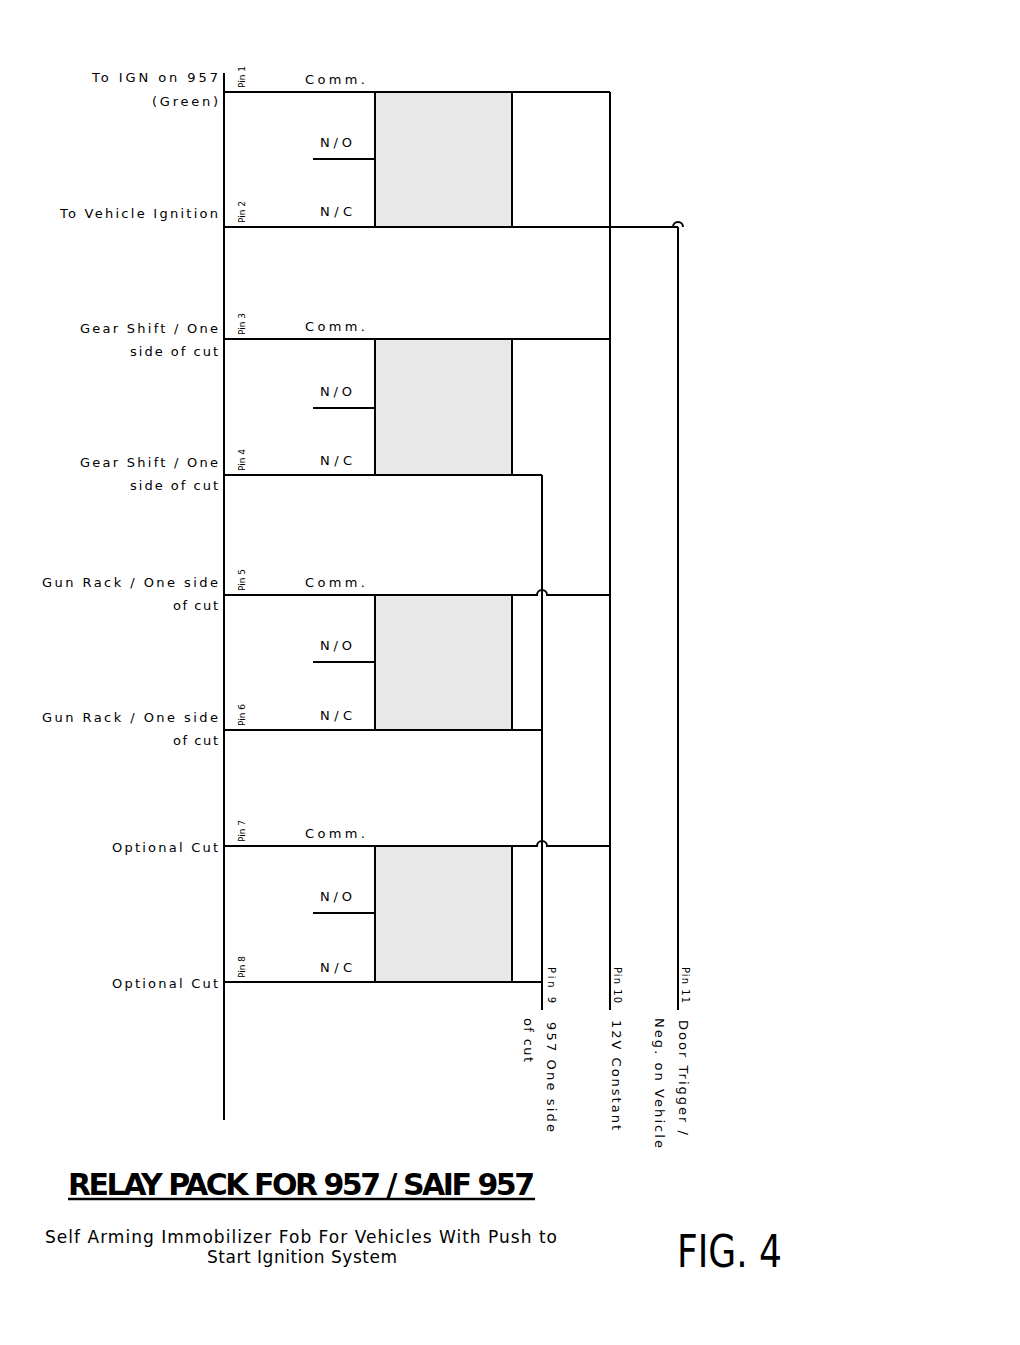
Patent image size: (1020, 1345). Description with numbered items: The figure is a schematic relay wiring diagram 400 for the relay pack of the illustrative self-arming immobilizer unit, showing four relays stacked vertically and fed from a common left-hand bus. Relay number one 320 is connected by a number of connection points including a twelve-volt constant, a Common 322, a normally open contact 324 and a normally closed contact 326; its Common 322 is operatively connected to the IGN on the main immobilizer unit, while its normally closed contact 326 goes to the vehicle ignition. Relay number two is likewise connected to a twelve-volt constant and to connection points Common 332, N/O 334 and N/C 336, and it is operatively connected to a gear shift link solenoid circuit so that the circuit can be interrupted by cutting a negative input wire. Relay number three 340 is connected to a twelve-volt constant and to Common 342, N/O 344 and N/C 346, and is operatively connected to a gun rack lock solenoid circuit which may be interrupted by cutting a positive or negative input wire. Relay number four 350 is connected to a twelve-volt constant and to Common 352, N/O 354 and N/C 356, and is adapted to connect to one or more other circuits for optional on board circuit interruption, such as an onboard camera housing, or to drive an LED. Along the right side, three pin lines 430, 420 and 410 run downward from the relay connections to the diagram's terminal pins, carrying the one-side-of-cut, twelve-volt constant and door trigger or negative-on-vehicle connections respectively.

The relay no. 1 320 is at (496, 90).
The Common 322 is at (257, 90).
The normally open (N/O) contact 324 is at (343, 161).
The normally closed (N/C) contact 326 is at (255, 226).
The Common 332 is at (257, 337).
The N/O 334 is at (342, 410).
The N/C 336 is at (255, 473).
The relay no. 3 340 is at (513, 450).
The Common 342 is at (257, 593).
The N/O 344 is at (343, 664).
The N/C 346 is at (255, 728).
The relay no. 4 350 is at (412, 983).
The Common 352 is at (257, 844).
The N/O 354 is at (348, 915).
The N/C 356 is at (250, 980).
The schematic relay wiring diagram 400 is at (790, 1086).
The pin 11 door trigger line 410 is at (673, 824).
The pin 10 12V constant line 420 is at (613, 933).
The pin 9 957 one side of cut line 430 is at (540, 945).